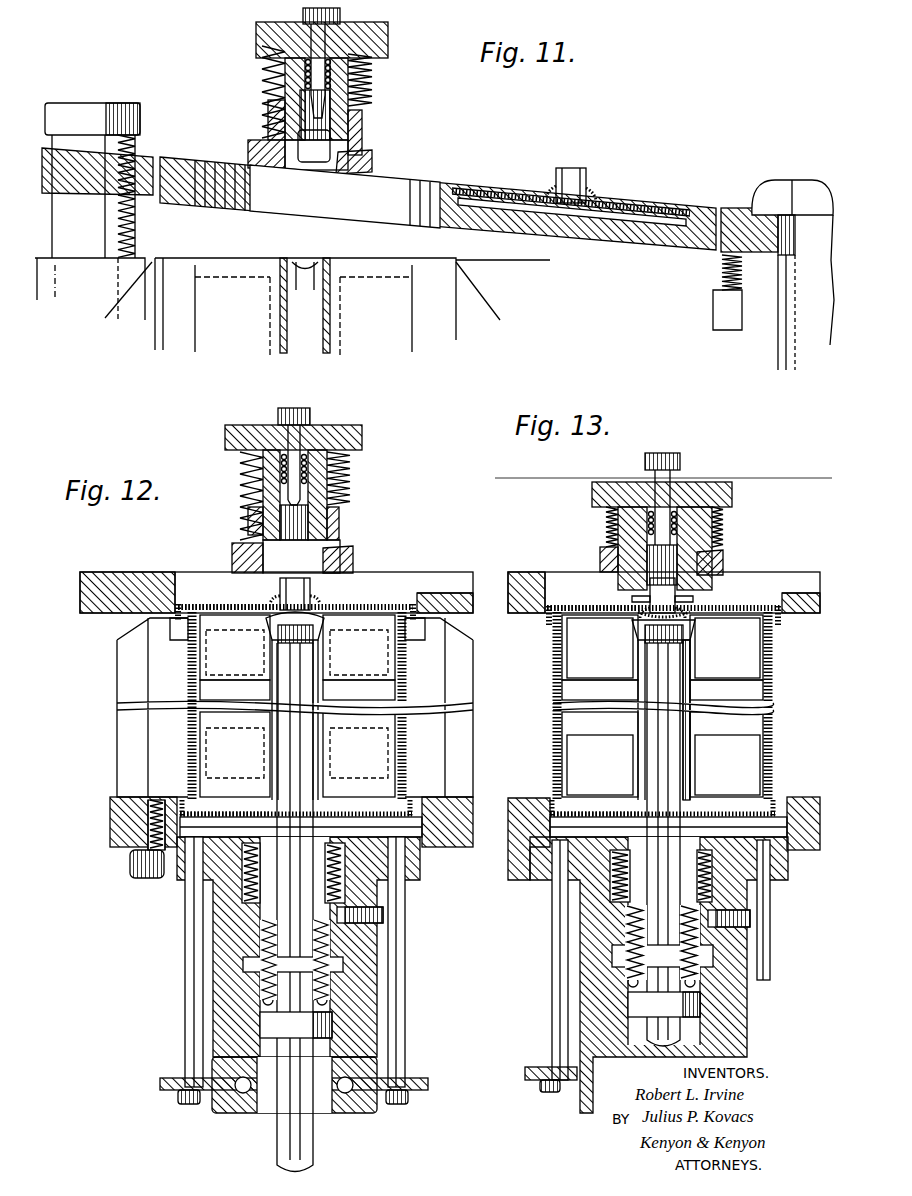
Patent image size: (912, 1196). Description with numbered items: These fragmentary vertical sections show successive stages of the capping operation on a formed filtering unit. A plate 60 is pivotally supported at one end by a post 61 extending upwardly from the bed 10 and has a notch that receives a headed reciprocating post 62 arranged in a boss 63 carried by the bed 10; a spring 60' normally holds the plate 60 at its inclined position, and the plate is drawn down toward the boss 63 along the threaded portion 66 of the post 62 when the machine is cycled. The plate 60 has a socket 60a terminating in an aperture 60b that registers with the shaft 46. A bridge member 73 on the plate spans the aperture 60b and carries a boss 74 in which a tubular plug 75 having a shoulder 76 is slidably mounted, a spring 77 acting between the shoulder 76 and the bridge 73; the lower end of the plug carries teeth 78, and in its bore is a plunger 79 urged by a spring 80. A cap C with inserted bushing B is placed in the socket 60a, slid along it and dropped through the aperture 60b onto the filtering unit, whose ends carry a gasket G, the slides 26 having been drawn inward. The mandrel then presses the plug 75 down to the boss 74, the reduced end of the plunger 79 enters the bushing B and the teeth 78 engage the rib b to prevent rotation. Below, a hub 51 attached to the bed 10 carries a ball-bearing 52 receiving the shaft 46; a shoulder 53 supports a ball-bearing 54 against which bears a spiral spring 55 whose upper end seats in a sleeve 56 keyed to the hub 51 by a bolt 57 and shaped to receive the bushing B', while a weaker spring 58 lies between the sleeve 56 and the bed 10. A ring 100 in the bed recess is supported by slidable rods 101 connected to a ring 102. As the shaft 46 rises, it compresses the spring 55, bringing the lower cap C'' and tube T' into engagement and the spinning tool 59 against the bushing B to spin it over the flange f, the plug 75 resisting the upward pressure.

In FIG. 11, the shoulder 76 is at (388, 44).
In FIG. 12, the shoulder 76 is at (225, 436).
In FIG. 11, the spring 80 is at (300, 62).
In FIG. 12, the spring 80 is at (312, 465).
In FIG. 13, the spring 80 is at (677, 508).
In FIG. 11, the spring 77 is at (262, 78).
In FIG. 12, the spring 77 is at (345, 488).
In FIG. 13, the spring 77 is at (607, 527).
In FIG. 11, the tubular plug 75 is at (372, 72).
In FIG. 12, the tubular plug 75 is at (245, 472).
In FIG. 13, the tubular plug 75 is at (723, 520).
In FIG. 11, the plunger 79 is at (300, 102).
In FIG. 12, the plunger 79 is at (285, 522).
In FIG. 13, the plunger 79 is at (723, 556).
In FIG. 11, the boss 74 is at (362, 118).
In FIG. 12, the boss 74 is at (340, 520).
In FIG. 11, the bridge member 73 is at (250, 152).
In FIG. 12, the bridge member 73 is at (232, 557).
In FIG. 13, the bridge member 73 is at (600, 560).
In FIG. 11, the serrations or teeth 78 is at (314, 151).
In FIG. 11, the headed reciprocating post 62 is at (95, 104).
In FIG. 11, the threaded portion 66 is at (136, 240).
In FIG. 11, the boss 63 is at (93, 289).
In FIG. 11, the plate 60 is at (438, 218).
In FIG. 12, the plate 60 is at (274, 608).
In FIG. 13, the plate 60 is at (664, 609).
In FIG. 11, the socket 60a is at (452, 186).
In FIG. 12, the socket 60a is at (446, 580).
In FIG. 13, the socket 60a is at (806, 582).
In FIG. 11, the aperture 60b is at (276, 205).
In FIG. 12, the aperture 60b is at (192, 580).
In FIG. 13, the aperture 60b is at (567, 592).
In FIG. 11, the spring 60' is at (711, 282).
In FIG. 11, the post 61 is at (773, 275).
In FIG. 11, the flanged cap C is at (571, 196).
In FIG. 12, the flanged cap C is at (295, 584).
In FIG. 13, the flanged cap C is at (679, 625).
In FIG. 11, the bushing B is at (556, 179).
In FIG. 12, the bushing B is at (277, 593).
In FIG. 13, the bushing B is at (705, 583).
In FIG. 11, the rib b is at (592, 192).
In FIG. 12, the rib b is at (318, 598).
In FIG. 13, the rib b is at (690, 600).
In FIG. 12, the gasket G is at (240, 606).
In FIG. 13, the gasket G is at (610, 612).
In FIG. 12, the rotating spinning tool 59 is at (272, 648).
In FIG. 13, the rotating spinning tool 59 is at (640, 650).
In FIG. 12, the slides or plungers 26 is at (135, 700).
In FIG. 12, the bushing B' is at (359, 706).
In FIG. 13, the bushing B' is at (726, 706).
In FIG. 12, the lower gasket plate C'' is at (318, 780).
In FIG. 13, the lower gasket plate C'' is at (685, 793).
In FIG. 12, the bed 10 is at (110, 830).
In FIG. 13, the bed 10 is at (522, 805).
In FIG. 12, the ring or platform 100 is at (402, 829).
In FIG. 13, the ring or platform 100 is at (770, 818).
In FIG. 12, the hub 51 is at (420, 870).
In FIG. 13, the hub 51 is at (790, 880).
In FIG. 12, the spring 58 is at (245, 884).
In FIG. 13, the spring 58 is at (612, 880).
In FIG. 12, the sleeve 56 is at (262, 930).
In FIG. 13, the sleeve 56 is at (627, 935).
In FIG. 12, the bolt 57 is at (383, 915).
In FIG. 13, the bolt 57 is at (750, 918).
In FIG. 12, the spiral spring 55 is at (343, 966).
In FIG. 13, the spiral spring 55 is at (713, 958).
In FIG. 12, the ball-bearing 54 is at (328, 1000).
In FIG. 13, the ball-bearing 54 is at (696, 982).
In FIG. 12, the shoulder 53 is at (332, 1025).
In FIG. 13, the shoulder 53 is at (700, 1005).
In FIG. 12, the slidable rods 101 is at (185, 1018).
In FIG. 13, the slidable rods 101 is at (552, 1022).
In FIG. 12, the ring 102 is at (165, 1085).
In FIG. 12, the ball-bearing 52 is at (360, 1110).
In FIG. 12, the shaft 46 is at (306, 1132).
In FIG. 13, the shaft 46 is at (665, 1046).
In FIG. 13, the inwardly projecting flange f is at (692, 622).
In FIG. 13, the tube T' is at (704, 720).